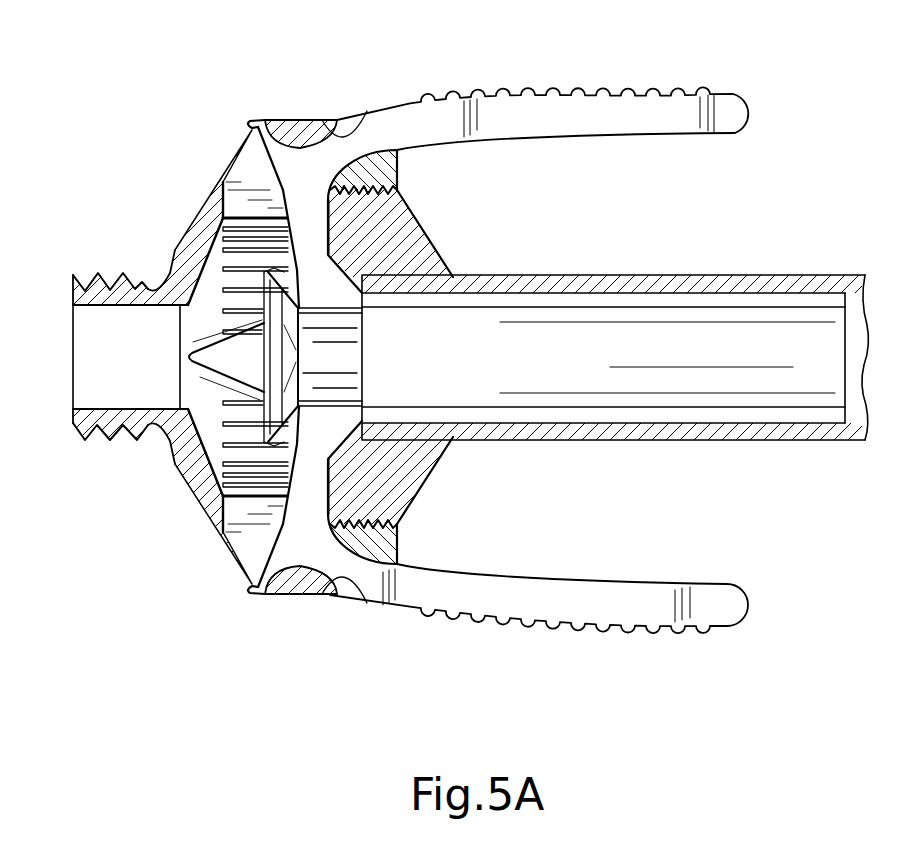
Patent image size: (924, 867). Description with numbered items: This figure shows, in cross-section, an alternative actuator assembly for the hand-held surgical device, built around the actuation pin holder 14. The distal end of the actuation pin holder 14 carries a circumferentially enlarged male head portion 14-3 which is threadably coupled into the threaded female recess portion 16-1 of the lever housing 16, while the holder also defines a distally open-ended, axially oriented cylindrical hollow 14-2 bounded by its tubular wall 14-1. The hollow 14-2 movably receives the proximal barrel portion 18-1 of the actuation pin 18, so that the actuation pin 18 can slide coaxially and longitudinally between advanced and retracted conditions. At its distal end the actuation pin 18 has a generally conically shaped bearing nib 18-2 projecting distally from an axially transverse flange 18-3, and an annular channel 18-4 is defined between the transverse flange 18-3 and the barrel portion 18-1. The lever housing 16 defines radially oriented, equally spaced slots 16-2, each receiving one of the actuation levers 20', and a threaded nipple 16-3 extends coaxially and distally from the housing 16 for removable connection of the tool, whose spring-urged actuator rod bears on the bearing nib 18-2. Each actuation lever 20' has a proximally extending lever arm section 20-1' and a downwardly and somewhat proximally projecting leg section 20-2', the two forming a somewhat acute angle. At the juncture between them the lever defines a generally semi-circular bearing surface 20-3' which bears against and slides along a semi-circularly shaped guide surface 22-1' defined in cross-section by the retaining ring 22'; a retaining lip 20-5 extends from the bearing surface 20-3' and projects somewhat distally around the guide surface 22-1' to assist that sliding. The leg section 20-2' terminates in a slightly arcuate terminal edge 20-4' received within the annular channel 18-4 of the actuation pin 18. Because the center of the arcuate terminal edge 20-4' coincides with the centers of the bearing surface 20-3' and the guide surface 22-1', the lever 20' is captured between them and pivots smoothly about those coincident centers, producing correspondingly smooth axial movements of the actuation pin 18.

The actuation pin holder 14 is at (575, 276).
The tube lower wall 14-1 is at (682, 443).
The cylindrical hollow 14-2 is at (858, 405).
The male head portion 14-3 is at (400, 272).
The lever housing 16 is at (172, 470).
The threaded female recess portion 16-1 is at (397, 172).
The slots 16-2 is at (217, 252).
The threaded nipple 16-3 is at (117, 276).
The actuation pin 18 is at (705, 292).
The barrel portion 18-1 is at (573, 377).
The bearing nib 18-2 is at (243, 371).
The transverse flange 18-3 is at (263, 395).
The annular channel 18-4 is at (325, 354).
The actuation levers 20' is at (498, 367).
The lever arm sections 20-1' is at (539, 360).
The leg sections 20-2' is at (405, 357).
The bearing surface 20-3' is at (256, 373).
The arcuate terminal edge 20-4' is at (390, 360).
The retaining lip 20-5 is at (247, 124).
The retaining ring 22' is at (303, 351).
The guide surface 22-1' is at (395, 373).